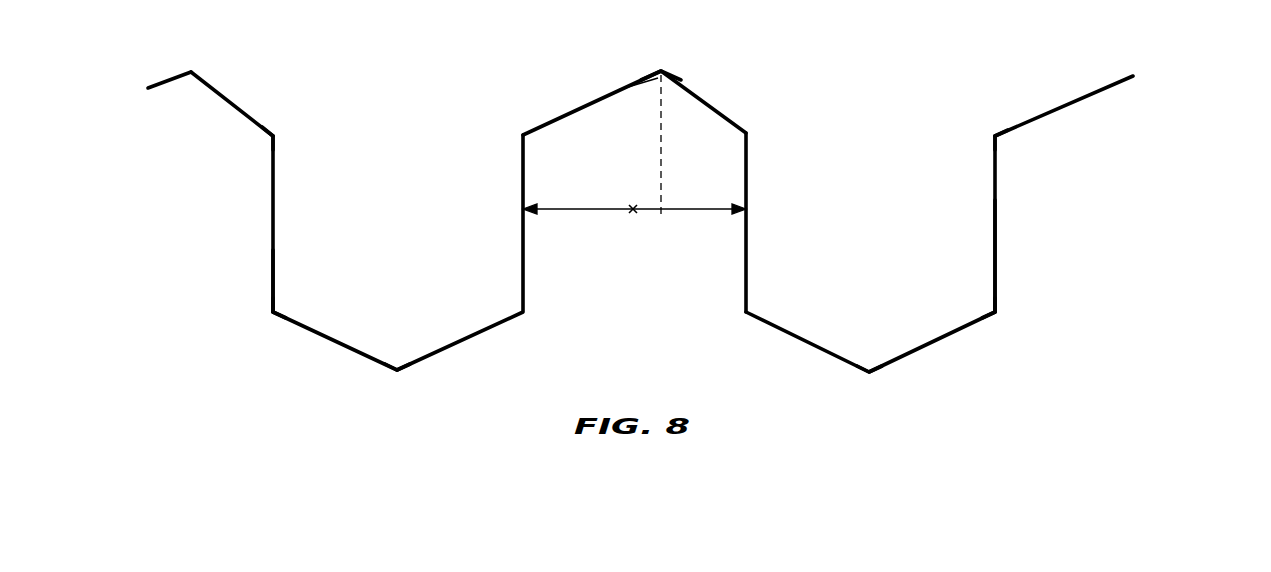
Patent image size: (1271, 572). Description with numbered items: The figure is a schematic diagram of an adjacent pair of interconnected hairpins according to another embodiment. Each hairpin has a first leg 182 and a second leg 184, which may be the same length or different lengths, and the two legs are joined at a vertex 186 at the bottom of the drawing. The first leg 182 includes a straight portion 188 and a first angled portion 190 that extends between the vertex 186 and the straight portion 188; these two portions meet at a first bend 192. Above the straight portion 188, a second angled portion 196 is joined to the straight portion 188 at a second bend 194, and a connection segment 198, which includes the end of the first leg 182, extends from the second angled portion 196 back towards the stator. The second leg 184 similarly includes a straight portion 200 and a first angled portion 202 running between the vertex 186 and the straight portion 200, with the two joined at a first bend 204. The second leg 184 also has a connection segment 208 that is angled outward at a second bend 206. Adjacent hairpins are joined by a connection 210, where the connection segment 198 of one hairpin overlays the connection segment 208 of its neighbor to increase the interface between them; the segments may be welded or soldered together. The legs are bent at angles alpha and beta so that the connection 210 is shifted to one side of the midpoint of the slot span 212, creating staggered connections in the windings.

The first leg 182 is at (273, 273).
The second leg 184 is at (523, 270).
The vertex 186 is at (397, 373).
The straight portion 188 is at (275, 212).
The first angled portion 190 is at (310, 325).
The first bend 192 is at (273, 315).
The second bend 194 is at (277, 130).
The second angled portion 196 is at (217, 90).
The connection segment 198 is at (172, 80).
The straight portion 200 is at (998, 237).
The first angled portion 202 is at (912, 355).
The first bend 204 is at (997, 313).
The second bend 206 is at (993, 135).
The connection segment 208 is at (537, 127).
The connection 210 is at (633, 80).
The slot span 212 is at (635, 215).